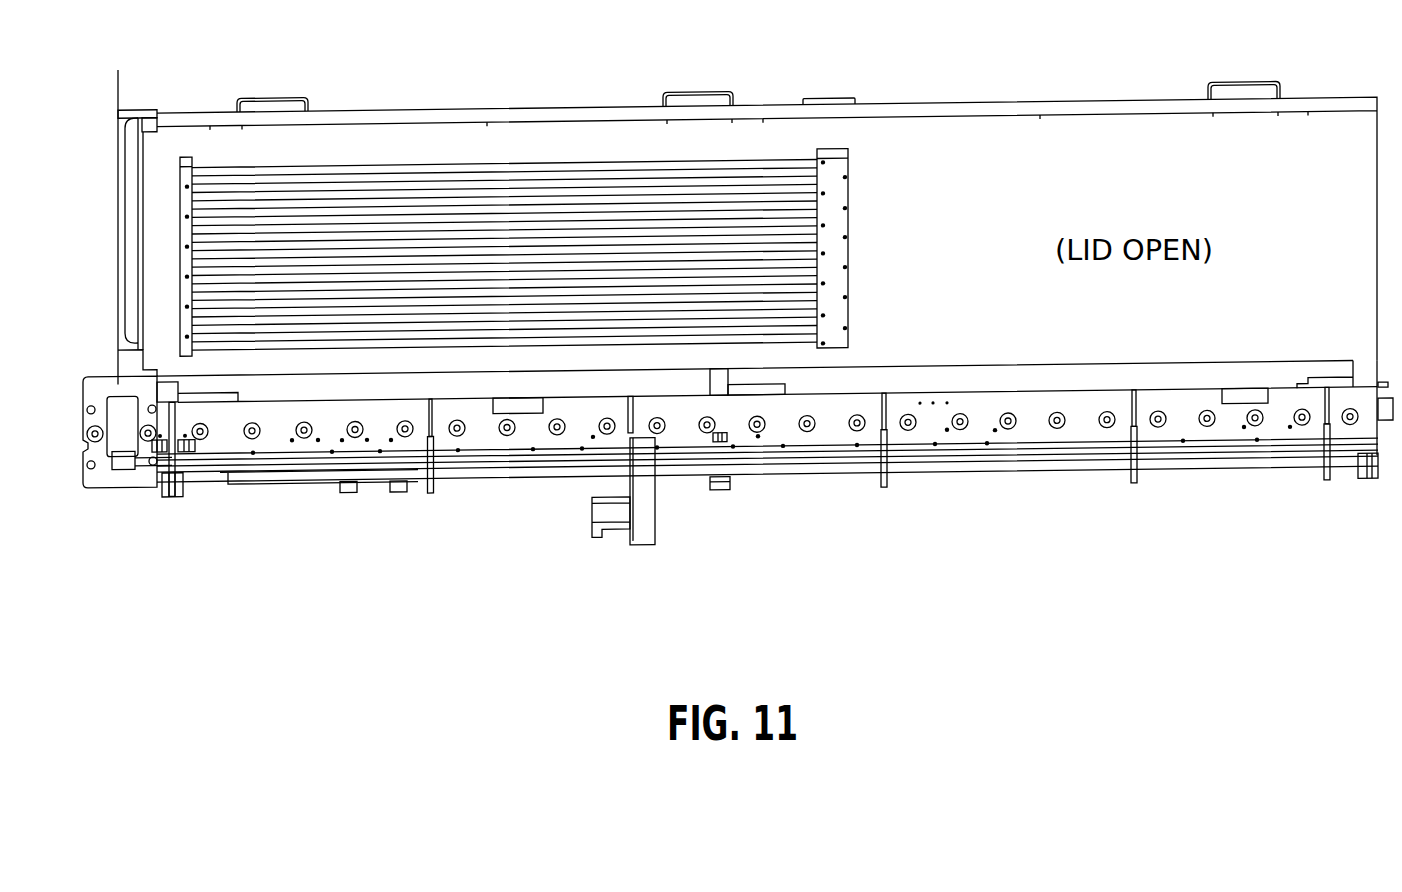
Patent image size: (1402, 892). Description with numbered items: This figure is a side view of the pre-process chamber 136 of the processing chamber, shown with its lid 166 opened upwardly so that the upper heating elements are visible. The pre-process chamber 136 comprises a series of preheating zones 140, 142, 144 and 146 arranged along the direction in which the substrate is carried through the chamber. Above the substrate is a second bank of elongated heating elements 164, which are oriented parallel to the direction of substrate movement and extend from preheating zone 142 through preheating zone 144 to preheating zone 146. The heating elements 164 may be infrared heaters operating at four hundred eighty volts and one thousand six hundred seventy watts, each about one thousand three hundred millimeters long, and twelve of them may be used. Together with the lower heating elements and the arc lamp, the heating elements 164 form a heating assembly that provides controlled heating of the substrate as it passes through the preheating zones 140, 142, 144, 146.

The pre-process chamber 136 is at (622, 637).
The preheating zone 140 is at (1236, 488).
The preheating zone 142 is at (957, 493).
The preheating zone 144 is at (688, 498).
The preheating zone 146 is at (372, 503).
The heating elements 164 is at (624, 179).
The lid 166 is at (942, 103).